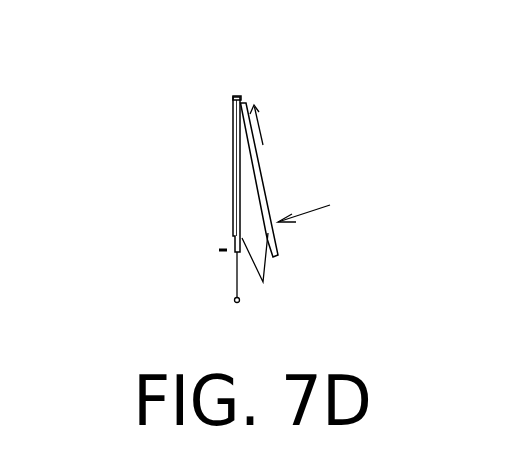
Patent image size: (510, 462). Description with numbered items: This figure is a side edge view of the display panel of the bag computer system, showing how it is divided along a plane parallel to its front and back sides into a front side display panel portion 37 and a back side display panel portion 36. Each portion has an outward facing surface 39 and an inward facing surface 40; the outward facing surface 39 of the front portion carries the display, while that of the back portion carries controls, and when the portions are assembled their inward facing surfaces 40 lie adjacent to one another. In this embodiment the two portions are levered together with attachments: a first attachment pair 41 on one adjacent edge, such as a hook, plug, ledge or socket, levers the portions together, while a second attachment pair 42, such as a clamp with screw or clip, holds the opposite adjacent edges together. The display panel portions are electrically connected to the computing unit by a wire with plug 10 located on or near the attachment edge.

The wire with plug 10 is at (238, 95).
The back side display panel portion 36 is at (272, 198).
The front side display panel portion 37 is at (232, 195).
The outward facing surface 39 is at (230, 222).
The inward facing surface 40 is at (274, 289).
The first attachment pair 41 is at (245, 95).
The second attachment pair 42 is at (227, 257).